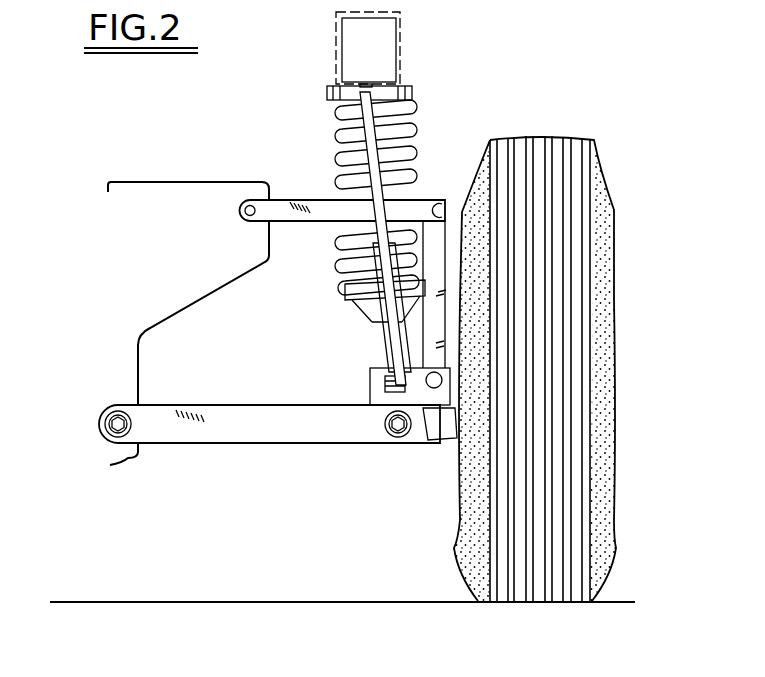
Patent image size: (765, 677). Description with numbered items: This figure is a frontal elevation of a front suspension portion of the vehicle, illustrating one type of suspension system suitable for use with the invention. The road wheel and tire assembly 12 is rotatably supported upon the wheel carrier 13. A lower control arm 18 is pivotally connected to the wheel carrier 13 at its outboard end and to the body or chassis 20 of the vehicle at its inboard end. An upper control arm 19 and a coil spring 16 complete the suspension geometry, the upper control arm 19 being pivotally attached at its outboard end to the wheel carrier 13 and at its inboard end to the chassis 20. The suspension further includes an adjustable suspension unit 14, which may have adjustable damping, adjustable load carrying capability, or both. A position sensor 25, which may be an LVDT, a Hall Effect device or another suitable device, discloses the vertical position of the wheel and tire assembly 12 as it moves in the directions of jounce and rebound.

The road wheel and tire assembly 12 is at (612, 320).
The wheel carrier 13 is at (445, 235).
The adjustable suspension unit 14 is at (390, 160).
The coil spring 16 is at (346, 132).
The lower control arm 18 is at (222, 445).
The upper control arm 19 is at (312, 160).
The body or chassis 20 is at (112, 354).
The position sensor 25 is at (386, 338).